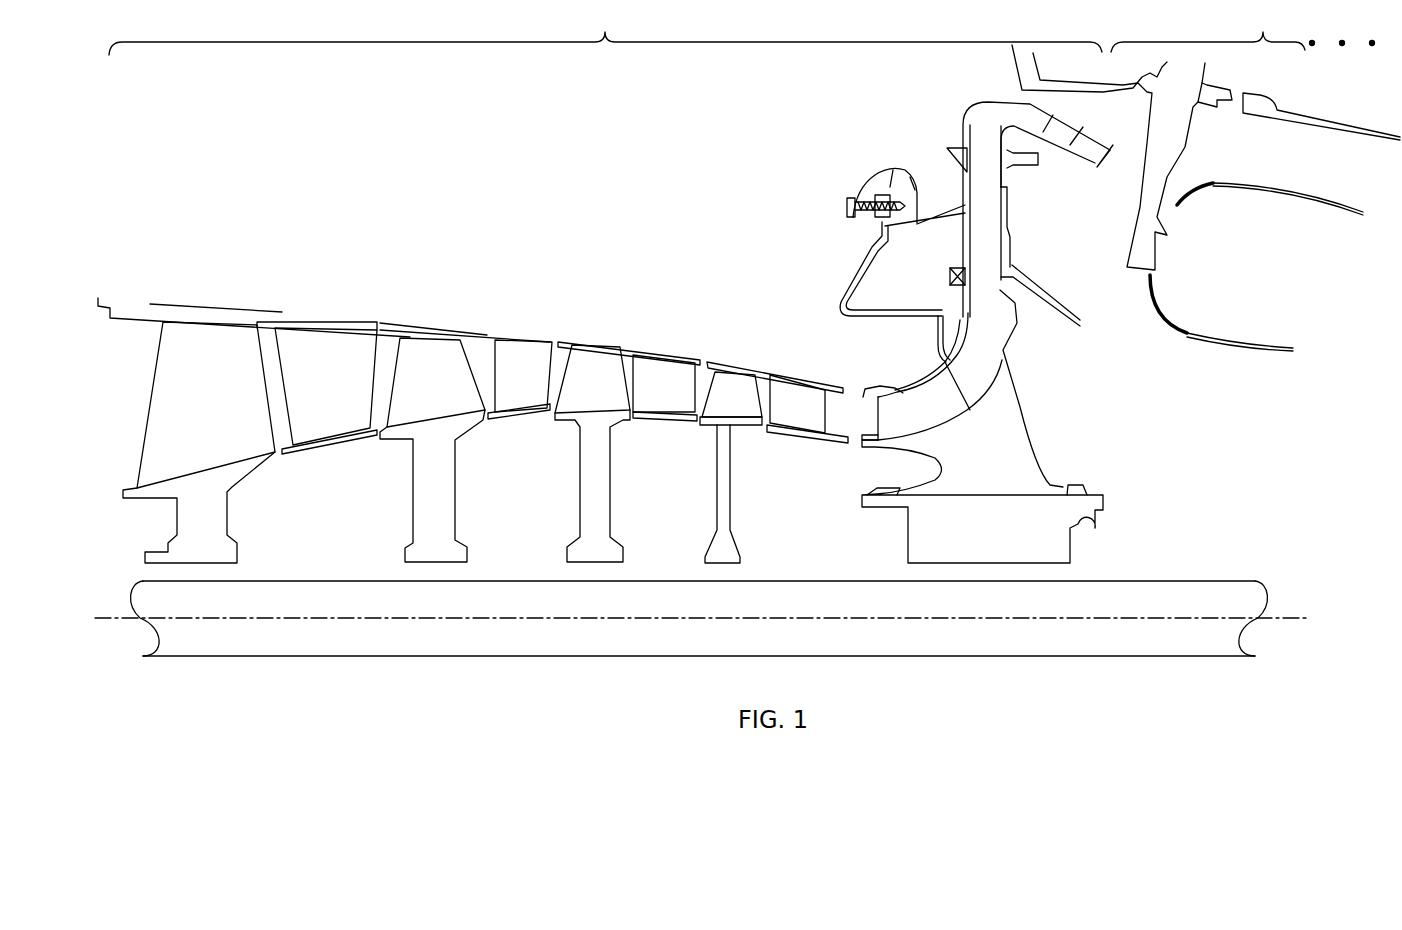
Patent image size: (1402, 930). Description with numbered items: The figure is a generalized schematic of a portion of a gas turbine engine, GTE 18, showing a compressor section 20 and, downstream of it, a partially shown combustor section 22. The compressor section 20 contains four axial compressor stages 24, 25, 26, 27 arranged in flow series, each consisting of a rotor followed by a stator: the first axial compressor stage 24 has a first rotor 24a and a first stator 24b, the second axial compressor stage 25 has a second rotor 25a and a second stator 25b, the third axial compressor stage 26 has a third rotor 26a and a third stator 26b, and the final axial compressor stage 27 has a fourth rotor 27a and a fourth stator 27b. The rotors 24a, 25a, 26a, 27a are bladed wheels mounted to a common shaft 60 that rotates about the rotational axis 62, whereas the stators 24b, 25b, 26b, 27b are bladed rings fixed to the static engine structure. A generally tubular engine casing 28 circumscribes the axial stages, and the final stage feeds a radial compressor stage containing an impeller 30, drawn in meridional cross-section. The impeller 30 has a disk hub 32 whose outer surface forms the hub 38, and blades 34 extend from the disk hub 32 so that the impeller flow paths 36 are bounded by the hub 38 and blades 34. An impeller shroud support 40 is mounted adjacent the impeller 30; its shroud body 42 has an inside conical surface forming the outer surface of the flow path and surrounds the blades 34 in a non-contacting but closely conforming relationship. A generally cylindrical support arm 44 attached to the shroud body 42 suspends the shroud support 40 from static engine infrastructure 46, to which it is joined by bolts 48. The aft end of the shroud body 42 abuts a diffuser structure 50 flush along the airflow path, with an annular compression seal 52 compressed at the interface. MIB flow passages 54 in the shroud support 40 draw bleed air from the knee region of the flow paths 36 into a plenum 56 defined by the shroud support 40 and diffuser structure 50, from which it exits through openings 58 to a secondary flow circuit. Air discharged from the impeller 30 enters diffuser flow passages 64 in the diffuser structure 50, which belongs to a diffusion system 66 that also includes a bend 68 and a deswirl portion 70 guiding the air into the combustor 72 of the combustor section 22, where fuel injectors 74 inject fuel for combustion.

The gas turbine engine 18 is at (260, 208).
The compressor section 20 is at (605, 31).
The combustor section 22 is at (1208, 30).
The first axial compressor stage 24 is at (377, 300).
The first rotor 24a is at (237, 407).
The first stator 24b is at (355, 407).
The second axial compressor stage 25 is at (555, 320).
The second rotor 25a is at (455, 398).
The second stator 25b is at (546, 395).
The third axial compressor stage 26 is at (698, 338).
The third rotor 26a is at (618, 400).
The third stator 26b is at (690, 400).
The fourth axial compressor stage 27 is at (824, 357).
The fourth rotor 27a is at (756, 414).
The fourth stator 27b is at (820, 422).
The engine casing 28 is at (135, 303).
The impeller 30 is at (1032, 397).
The disk hub 32 is at (1005, 544).
The blades 34 is at (862, 430).
The impeller flow paths 36 is at (937, 422).
The hub 38 is at (985, 392).
The impeller shroud support 40 is at (853, 263).
The shroud body 42 is at (897, 390).
The support arm 44 is at (853, 292).
The static engine infrastructure 46 is at (866, 185).
The bolts 48 is at (847, 206).
The diffuser structure 50 is at (1012, 247).
The annular compression seal 52 is at (948, 275).
The MIB flow passages 54 is at (936, 346).
The plenum 56 is at (920, 306).
The openings 58 is at (941, 205).
The shaft 60 is at (813, 582).
The rotational axis 62 is at (120, 618).
The diffuser flow passages 64 is at (994, 197).
The diffusion system 66 is at (955, 110).
The bend 68 is at (984, 102).
The deswirl portion 70 is at (1097, 148).
The combustor 72 is at (1258, 198).
The fuel injectors 74 is at (1138, 205).